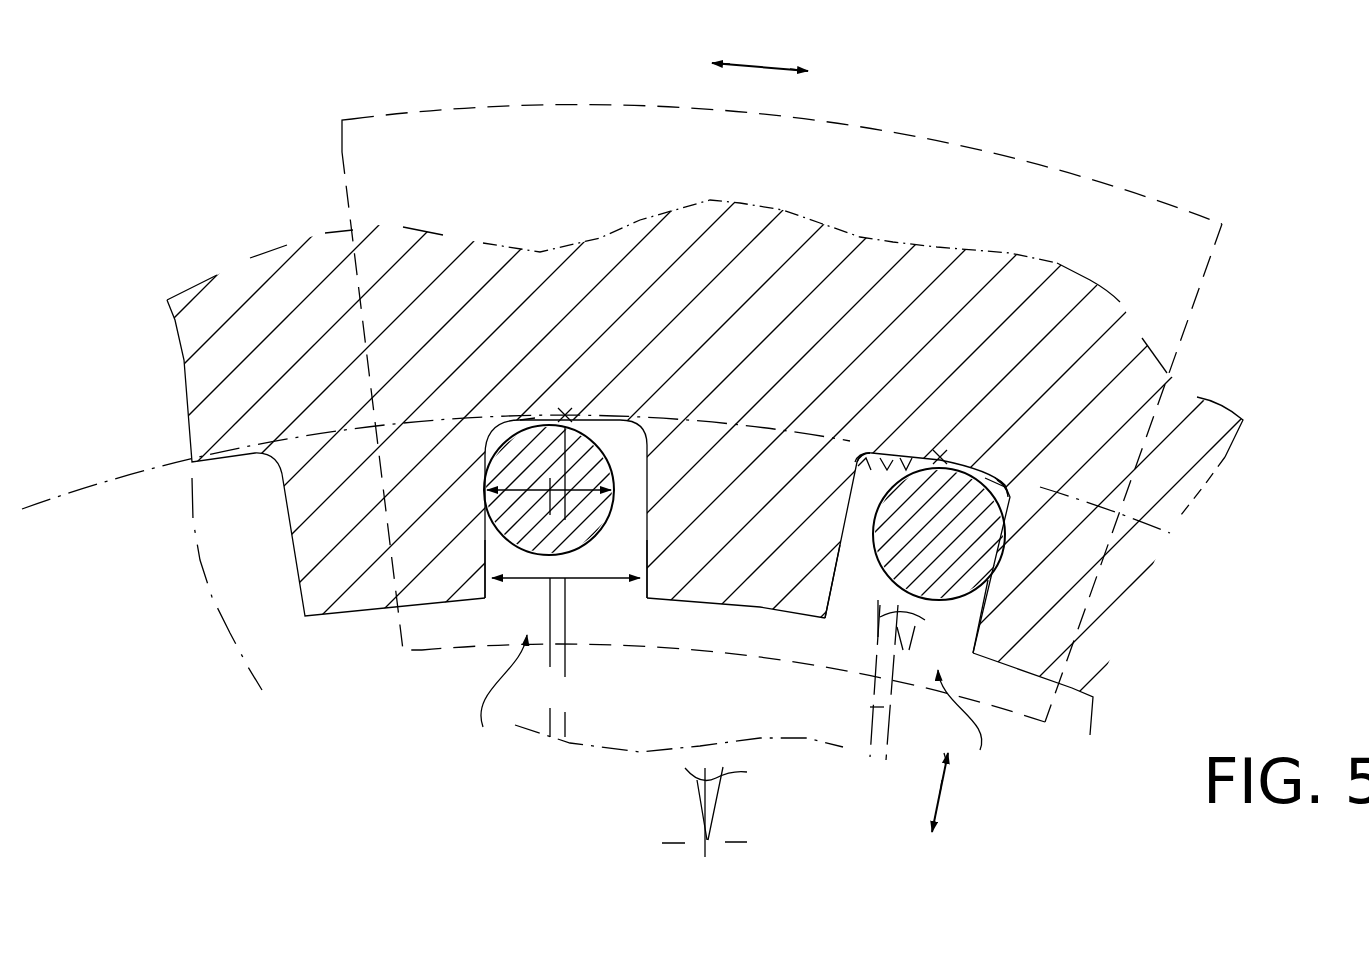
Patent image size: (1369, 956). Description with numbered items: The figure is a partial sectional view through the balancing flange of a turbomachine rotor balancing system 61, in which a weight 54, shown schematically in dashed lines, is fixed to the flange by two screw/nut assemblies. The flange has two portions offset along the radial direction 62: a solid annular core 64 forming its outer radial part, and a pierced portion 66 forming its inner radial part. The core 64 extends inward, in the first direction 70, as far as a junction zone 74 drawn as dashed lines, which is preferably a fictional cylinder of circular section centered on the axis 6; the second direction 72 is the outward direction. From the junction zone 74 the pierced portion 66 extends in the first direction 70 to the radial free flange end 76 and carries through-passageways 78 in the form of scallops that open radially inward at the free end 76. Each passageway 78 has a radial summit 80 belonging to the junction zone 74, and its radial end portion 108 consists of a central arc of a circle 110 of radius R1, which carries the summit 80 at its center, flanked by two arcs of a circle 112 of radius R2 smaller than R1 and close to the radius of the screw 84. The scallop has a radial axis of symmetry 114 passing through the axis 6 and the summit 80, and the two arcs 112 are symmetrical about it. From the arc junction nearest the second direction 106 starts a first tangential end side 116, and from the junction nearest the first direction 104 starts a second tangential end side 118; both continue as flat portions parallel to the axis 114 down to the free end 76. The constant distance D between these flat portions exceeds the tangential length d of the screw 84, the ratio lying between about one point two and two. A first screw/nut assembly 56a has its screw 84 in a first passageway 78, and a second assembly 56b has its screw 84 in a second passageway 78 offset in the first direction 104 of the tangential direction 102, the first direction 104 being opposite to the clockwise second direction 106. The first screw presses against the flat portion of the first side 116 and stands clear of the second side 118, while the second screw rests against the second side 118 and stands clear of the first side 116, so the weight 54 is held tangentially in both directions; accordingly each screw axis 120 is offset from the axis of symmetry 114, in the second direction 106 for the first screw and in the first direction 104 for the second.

The turbomachine rotor balancing system 61 is at (163, 134).
The weight 54 is at (338, 131).
The annular core 64 is at (1150, 344).
The pierced portion 66 is at (1097, 647).
The junction zone 74 is at (67, 495).
The radial free flange end 76 is at (1071, 697).
The through-passageway 78 is at (615, 567).
The radial summit 80 is at (567, 413).
The screw 84 is at (521, 479).
The maximum tangential length of the screw d is at (585, 407).
The maximum tangential distance D is at (520, 577).
The axis of symmetry 114 is at (566, 662).
The first tangential end side 116 is at (497, 587).
The second tangential end side 118 is at (645, 598).
The screw axis 120 is at (532, 413).
The arc of a circle of radius R2 112 is at (853, 455).
The arc of a circle of radius R1 110 is at (893, 462).
The radial end portion 108 is at (907, 457).
The radius of the side arcs R2 is at (853, 467).
The radius of the central arc R1 is at (905, 613).
The first screw/nut assembly 56a is at (497, 696).
The second screw/nut assembly 56b is at (973, 725).
The first direction 70 is at (927, 833).
The radial direction 62 is at (940, 793).
The second direction 72 is at (940, 753).
The tangential direction 102 is at (760, 63).
The first direction of the tangential direction 104 is at (815, 69).
The second direction of the tangential direction 106 is at (710, 62).
The axis 6 is at (713, 840).